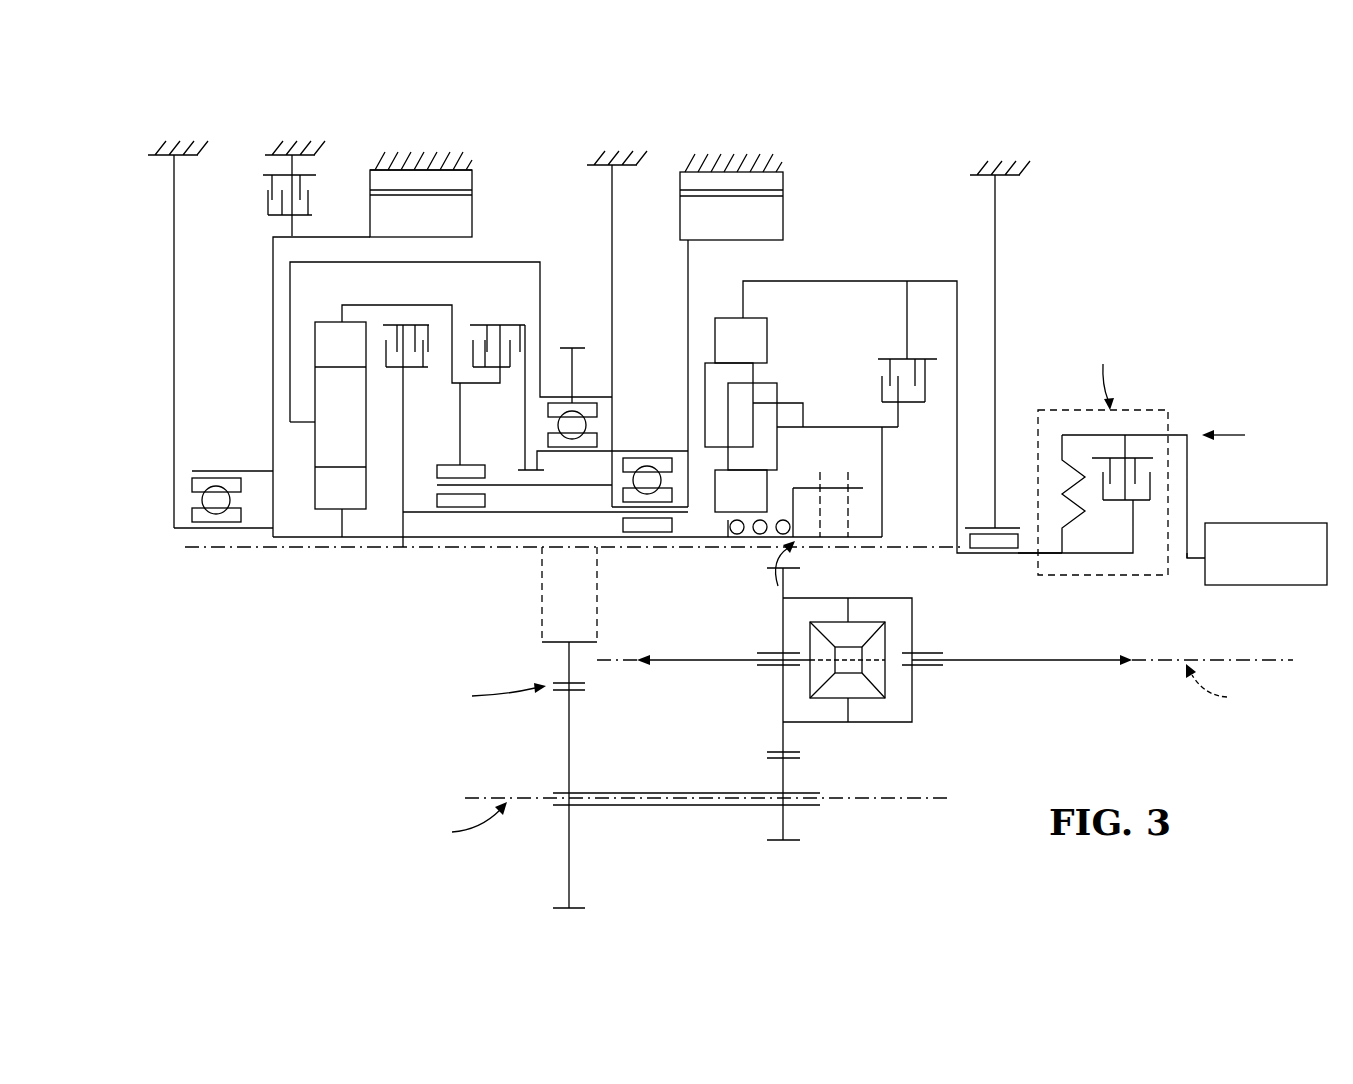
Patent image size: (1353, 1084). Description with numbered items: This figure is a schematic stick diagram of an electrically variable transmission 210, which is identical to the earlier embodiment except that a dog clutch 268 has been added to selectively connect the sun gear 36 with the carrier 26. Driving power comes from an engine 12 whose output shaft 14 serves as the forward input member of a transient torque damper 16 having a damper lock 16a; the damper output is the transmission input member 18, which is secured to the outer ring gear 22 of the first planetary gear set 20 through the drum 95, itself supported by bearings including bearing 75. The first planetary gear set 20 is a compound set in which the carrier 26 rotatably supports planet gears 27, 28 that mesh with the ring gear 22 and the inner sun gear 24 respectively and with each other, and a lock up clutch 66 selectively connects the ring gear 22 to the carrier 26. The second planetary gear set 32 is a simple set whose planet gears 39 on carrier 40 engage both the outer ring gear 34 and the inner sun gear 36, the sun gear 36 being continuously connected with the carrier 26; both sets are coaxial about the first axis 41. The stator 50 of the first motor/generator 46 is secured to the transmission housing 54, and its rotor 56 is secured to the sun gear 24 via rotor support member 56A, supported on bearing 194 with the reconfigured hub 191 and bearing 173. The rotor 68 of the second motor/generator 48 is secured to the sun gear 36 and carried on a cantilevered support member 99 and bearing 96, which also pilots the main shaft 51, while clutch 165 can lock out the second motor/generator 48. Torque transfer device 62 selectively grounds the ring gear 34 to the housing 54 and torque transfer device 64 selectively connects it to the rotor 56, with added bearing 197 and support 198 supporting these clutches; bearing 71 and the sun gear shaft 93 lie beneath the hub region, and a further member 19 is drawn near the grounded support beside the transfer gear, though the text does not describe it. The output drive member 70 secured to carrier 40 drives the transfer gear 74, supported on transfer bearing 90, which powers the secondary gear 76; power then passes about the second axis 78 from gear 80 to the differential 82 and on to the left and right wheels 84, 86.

The transmission housing 54 is at (152, 150).
The clutch 165 is at (255, 212).
The cantilevered support member 99 is at (272, 385).
The transmission 210 is at (112, 480).
The main shaft 51 is at (312, 540).
The first axis 41 is at (332, 570).
The bearing 96 is at (178, 516).
The second motor/generator 48 is at (658, 312).
The lock up clutch 66 is at (478, 170).
The rotor 68 is at (478, 213).
The output drive member 70 is at (540, 262).
The carrier 40 is at (302, 425).
The second planetary gear set 32 is at (299, 429).
The outer ring gear 34 is at (312, 350).
The planet gears 39 is at (312, 388).
The inner sun gear 36 is at (352, 517).
The torque transfer device 64 is at (382, 310).
The bearing 197 is at (422, 488).
The torque transfer device 62 is at (500, 388).
The support 198 is at (458, 400).
The hub 191 is at (516, 527).
The bearing 71 is at (458, 510).
The sun gear shaft 93 is at (540, 515).
The hub member 19 is at (546, 456).
The transfer gear 74 is at (572, 334).
The transfer bearing 90 is at (610, 423).
The bearing 194 is at (684, 490).
The bearing 173 is at (642, 536).
The first motor/generator 46 is at (773, 197).
The stator 50 is at (785, 178).
The rotor 56 is at (786, 228).
The rotor support member 56A is at (688, 290).
The first planetary gear set 20 is at (736, 382).
The outer ring gear 22 is at (770, 331).
The planet gear 27 is at (705, 378).
The planet gear 28 is at (728, 460).
The inner sun gear 24 is at (767, 497).
The carrier 26 is at (785, 402).
The drum 95 is at (838, 281).
The dog clutch 268 is at (872, 514).
The bearing 75 is at (975, 549).
The input member 18 is at (1020, 556).
The transient torque damper 16 is at (1145, 457).
The damper lock 16a is at (1168, 477).
The engine 12 is at (1302, 512).
The output shaft 14 is at (1195, 572).
The secondary gear 76 is at (567, 744).
The second axis 78 is at (648, 795).
The differential 82 is at (865, 704).
The gear 80 is at (786, 770).
The left wheel 84 is at (676, 664).
The right wheel 86 is at (1112, 655).